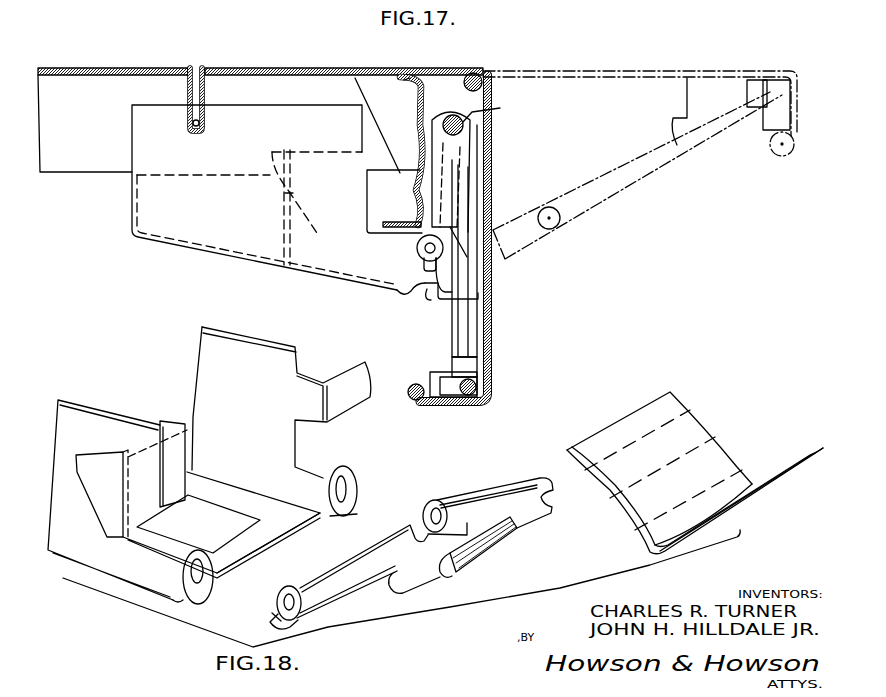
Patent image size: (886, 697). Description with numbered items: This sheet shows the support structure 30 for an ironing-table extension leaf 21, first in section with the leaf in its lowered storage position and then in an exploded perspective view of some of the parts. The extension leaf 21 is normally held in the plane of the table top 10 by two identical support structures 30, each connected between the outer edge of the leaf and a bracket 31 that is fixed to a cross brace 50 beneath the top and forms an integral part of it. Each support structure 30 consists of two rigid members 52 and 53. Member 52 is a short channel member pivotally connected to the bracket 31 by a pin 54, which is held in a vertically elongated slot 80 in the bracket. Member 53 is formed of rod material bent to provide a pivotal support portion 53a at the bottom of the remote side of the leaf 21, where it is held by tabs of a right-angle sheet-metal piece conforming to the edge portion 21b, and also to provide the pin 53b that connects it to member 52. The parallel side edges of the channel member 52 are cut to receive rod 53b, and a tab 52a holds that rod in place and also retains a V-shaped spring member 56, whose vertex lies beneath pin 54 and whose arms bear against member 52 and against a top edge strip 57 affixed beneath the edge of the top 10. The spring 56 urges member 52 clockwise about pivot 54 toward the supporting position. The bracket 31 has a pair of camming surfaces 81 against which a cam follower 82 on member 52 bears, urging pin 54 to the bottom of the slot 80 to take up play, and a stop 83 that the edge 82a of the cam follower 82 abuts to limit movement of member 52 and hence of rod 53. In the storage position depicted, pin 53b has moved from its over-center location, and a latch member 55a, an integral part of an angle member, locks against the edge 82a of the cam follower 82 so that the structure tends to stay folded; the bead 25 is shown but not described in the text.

In FIG. 17, the table top 10 is at (280, 58).
In FIG. 17, the cross brace 50 is at (88, 165).
In FIG. 17, the bracket 31 is at (215, 240).
In FIG. 18, the bracket 31 is at (100, 408).
In FIG. 17, the extension leaf 21 is at (629, 72).
In FIG. 17, the edge portion 21b is at (796, 85).
In FIG. 17, the bead 25 is at (478, 72).
In FIG. 17, the V-shaped spring member 56 is at (414, 115).
In FIG. 18, the V-shaped spring member 56 is at (695, 428).
In FIG. 17, the top edge strip 57 is at (410, 85).
In FIG. 17, the rigid member 52 is at (440, 190).
In FIG. 18, the rigid member 52 is at (470, 500).
In FIG. 17, the tab 52a is at (578, 230).
In FIG. 18, the tab 52a is at (490, 533).
In FIG. 17, the rigid member 53 is at (637, 175).
In FIG. 17, the pivotal support portion 53a is at (452, 362).
In FIG. 17, the pin 53b is at (453, 115).
In FIG. 17, the support structure 30 is at (472, 207).
In FIG. 17, the pin 54 is at (428, 247).
In FIG. 17, the vertically elongated slot 80 is at (431, 262).
In FIG. 18, the vertically elongated slot 80 is at (201, 550).
In FIG. 17, the camming surface 81 is at (425, 292).
In FIG. 18, the camming surface 81 is at (210, 600).
In FIG. 17, the cam follower 82 is at (446, 283).
In FIG. 18, the cam follower 82 is at (385, 542).
In FIG. 17, the edge 82a is at (432, 303).
In FIG. 18, the edge 82a is at (313, 580).
In FIG. 17, the stop 83 is at (398, 292).
In FIG. 18, the stop 83 is at (268, 547).
In FIG. 17, the latch member 55a is at (483, 305).